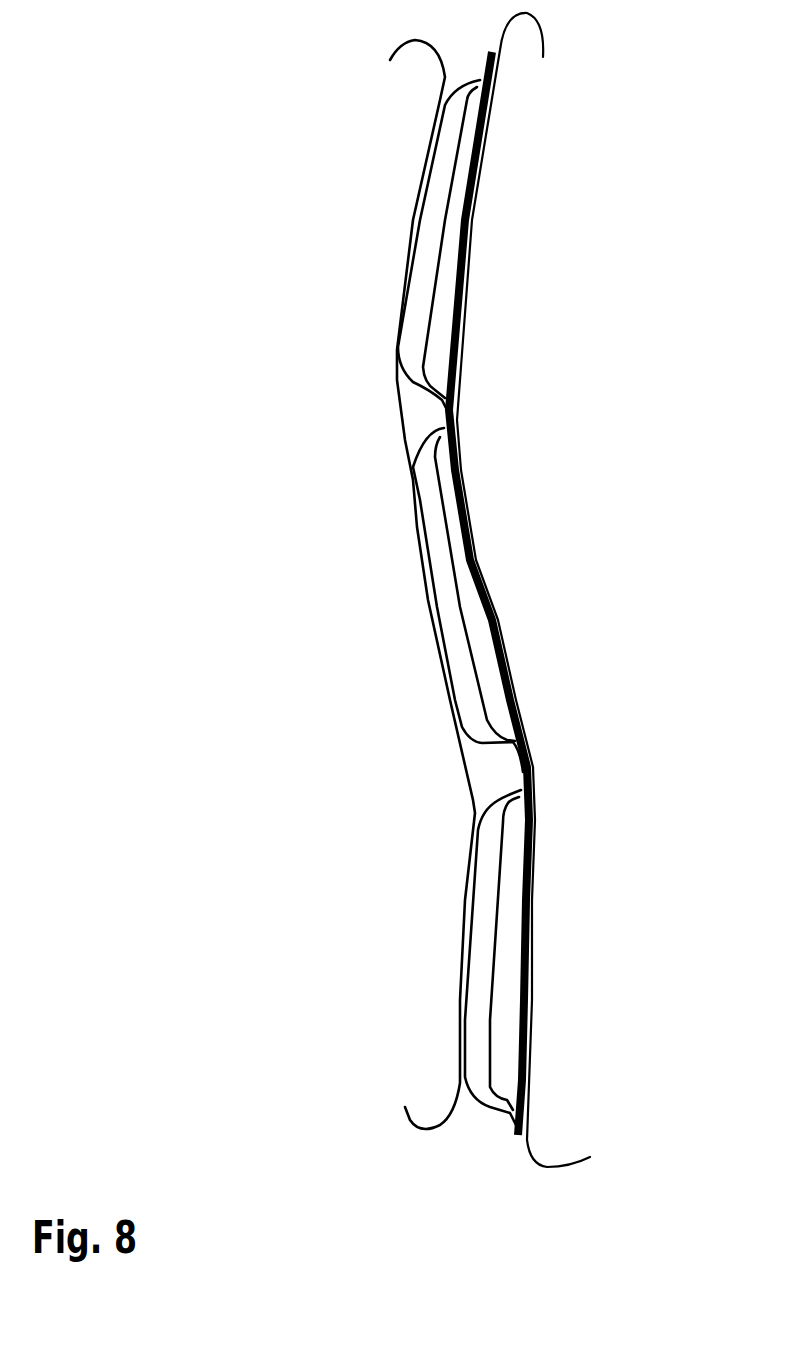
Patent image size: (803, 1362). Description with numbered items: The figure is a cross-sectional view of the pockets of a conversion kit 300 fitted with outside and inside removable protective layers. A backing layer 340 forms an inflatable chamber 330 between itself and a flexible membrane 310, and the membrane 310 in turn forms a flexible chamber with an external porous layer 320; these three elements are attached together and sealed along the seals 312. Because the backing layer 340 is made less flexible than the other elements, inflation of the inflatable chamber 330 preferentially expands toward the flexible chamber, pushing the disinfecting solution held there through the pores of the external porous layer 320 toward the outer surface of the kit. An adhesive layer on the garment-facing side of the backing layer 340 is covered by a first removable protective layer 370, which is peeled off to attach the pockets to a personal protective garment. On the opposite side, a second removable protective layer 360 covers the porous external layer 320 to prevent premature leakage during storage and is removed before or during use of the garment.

The conversion kit 300 is at (232, 188).
The flexible membrane 310 is at (432, 302).
The seals 312 is at (443, 425).
The external porous layer 320 is at (403, 373).
The inflatable chamber 330 is at (450, 237).
The backing layer 340 is at (480, 152).
The second removable protective layer 360 is at (477, 806).
The first removable protective layer 370 is at (532, 735).